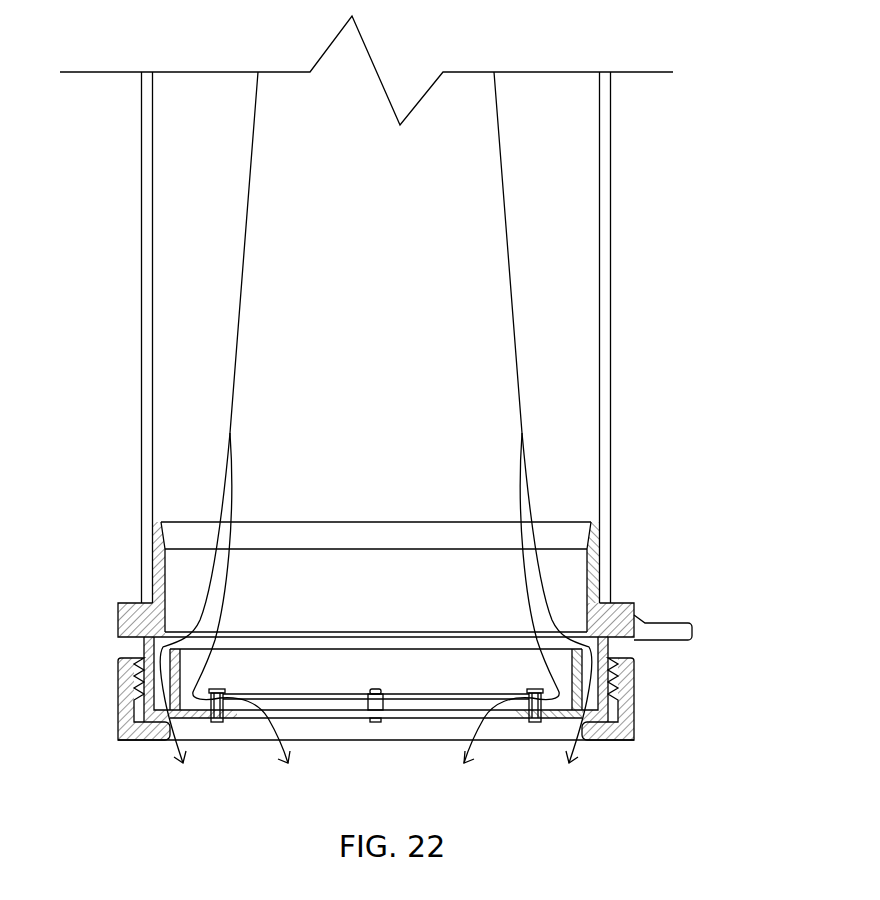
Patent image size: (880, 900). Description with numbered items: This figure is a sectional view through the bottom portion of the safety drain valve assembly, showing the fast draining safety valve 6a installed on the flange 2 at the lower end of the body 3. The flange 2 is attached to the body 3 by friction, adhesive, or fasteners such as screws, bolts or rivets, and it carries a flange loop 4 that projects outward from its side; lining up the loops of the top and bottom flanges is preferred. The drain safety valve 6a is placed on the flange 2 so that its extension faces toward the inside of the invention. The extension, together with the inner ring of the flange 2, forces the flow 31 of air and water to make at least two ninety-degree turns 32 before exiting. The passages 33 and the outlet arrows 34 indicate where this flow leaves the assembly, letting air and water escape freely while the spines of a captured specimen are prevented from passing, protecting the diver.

The flange 2 is at (618, 602).
The body 3 is at (615, 333).
The flange loop 4 is at (667, 632).
The fast draining safety valve 6a is at (562, 718).
The flow 31 is at (522, 590).
The ninety-degree turns 32 is at (155, 646).
The opening 33 is at (186, 702).
The outflow 34 is at (185, 772).